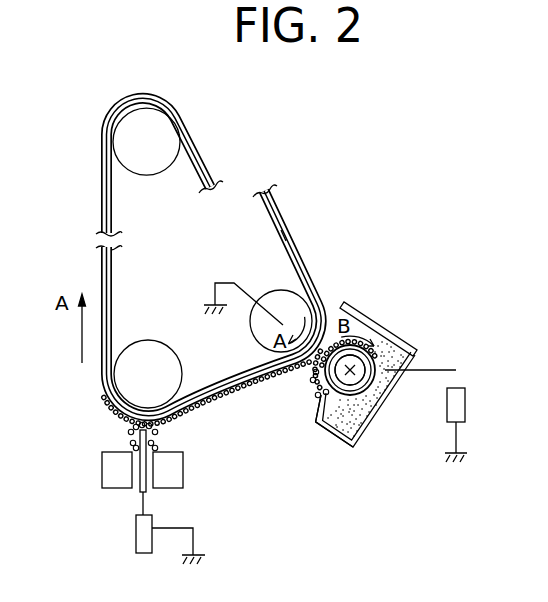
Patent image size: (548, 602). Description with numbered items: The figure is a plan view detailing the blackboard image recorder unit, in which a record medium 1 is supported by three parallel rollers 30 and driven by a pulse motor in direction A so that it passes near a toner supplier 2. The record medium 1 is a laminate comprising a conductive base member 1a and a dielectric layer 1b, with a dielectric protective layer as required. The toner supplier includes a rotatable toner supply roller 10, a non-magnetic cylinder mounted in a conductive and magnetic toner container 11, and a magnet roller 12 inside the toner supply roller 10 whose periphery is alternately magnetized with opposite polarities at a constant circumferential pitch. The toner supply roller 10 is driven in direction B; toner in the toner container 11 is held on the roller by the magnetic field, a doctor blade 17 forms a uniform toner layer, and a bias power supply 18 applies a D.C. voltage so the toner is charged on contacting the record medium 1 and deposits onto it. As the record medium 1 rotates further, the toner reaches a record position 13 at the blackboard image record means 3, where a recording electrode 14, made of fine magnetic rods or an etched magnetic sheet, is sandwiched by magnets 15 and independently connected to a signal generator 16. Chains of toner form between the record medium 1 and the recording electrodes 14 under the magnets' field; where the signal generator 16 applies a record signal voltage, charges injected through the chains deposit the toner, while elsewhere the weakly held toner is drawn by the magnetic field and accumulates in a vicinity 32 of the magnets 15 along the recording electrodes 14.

The record medium 1 is at (250, 177).
The conductive base member 1a is at (275, 238).
The dielectric layer 1b is at (285, 223).
The toner supplier 2 is at (392, 322).
The blackboard image record means 3 is at (145, 495).
The toner supply roller 10 is at (413, 351).
The toner container 11 is at (365, 443).
The magnet roller 12 is at (352, 383).
The record position 13 is at (153, 432).
The recording electrode 14 is at (139, 494).
The magnets 15 is at (102, 471).
The signal generator 16 is at (136, 552).
The doctor blade 17 is at (318, 408).
The bias power supply 18 is at (465, 396).
The rollers 30 is at (162, 123).
The vicinity of the magnets 32 is at (138, 433).